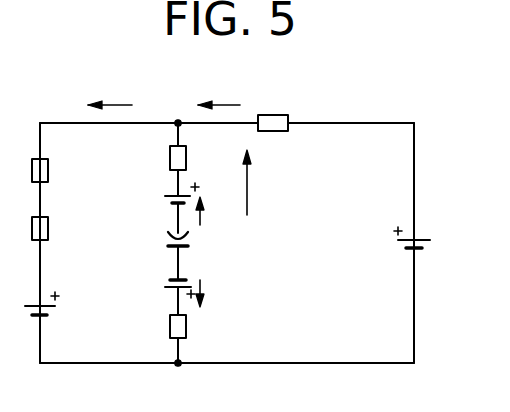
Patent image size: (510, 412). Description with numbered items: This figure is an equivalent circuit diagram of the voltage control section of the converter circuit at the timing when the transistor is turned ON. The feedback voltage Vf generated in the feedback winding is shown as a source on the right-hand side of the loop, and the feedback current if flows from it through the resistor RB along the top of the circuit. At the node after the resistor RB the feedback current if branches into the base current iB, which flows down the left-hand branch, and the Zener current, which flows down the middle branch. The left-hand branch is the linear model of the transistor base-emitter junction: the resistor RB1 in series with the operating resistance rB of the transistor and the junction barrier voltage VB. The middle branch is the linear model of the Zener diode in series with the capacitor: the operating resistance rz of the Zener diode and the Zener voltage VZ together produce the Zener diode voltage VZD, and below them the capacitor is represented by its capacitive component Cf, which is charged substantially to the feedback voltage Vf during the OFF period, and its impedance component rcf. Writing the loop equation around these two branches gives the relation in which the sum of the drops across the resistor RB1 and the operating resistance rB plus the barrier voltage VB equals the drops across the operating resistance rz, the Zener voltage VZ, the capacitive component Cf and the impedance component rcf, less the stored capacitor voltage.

The base current iB is at (110, 92).
The feedback current if is at (219, 91).
The resistor RB is at (273, 111).
The resistor RB1 is at (59, 173).
The operating resistance of the transistor rB is at (52, 232).
The junction barrier voltage VB is at (55, 310).
The operating resistance of the Zener diode rz is at (190, 159).
The Zener voltage VZ is at (197, 204).
The Zener diode voltage VZD is at (265, 182).
The capacitive component of the capacitor Cf is at (190, 245).
The feedback voltage Vf is at (310, 268).
The impedance component of the capacitor rcf is at (192, 330).